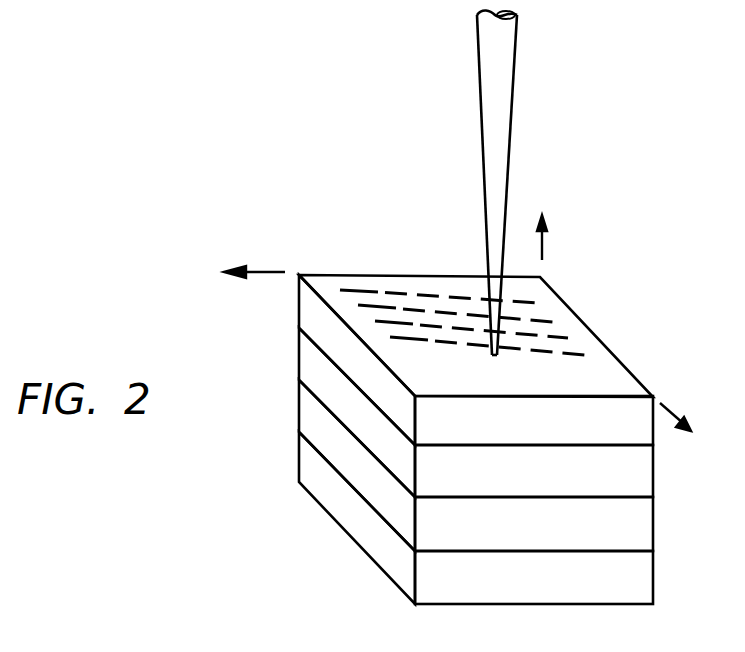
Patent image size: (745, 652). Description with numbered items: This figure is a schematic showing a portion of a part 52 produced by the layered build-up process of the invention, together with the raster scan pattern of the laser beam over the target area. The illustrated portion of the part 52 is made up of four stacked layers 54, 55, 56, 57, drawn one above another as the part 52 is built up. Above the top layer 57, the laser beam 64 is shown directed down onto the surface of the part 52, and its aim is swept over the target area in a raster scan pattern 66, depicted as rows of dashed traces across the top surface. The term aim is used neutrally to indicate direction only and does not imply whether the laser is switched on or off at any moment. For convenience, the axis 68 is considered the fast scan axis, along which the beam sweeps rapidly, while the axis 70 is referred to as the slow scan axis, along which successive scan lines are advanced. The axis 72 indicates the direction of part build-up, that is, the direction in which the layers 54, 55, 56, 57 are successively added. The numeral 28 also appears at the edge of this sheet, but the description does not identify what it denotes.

The sensor array 28 is at (0, 12).
The multilayer stack 52 is at (470, 440).
The bottom layer 54 is at (526, 585).
The second layer 55 is at (534, 533).
The third layer 56 is at (530, 481).
The top layer 57 is at (532, 428).
The stylus 64 is at (500, 62).
The dashed trace lines 66 is at (404, 297).
The direction arrow 68 is at (268, 272).
The direction arrow 70 is at (670, 402).
The direction arrow 72 is at (542, 246).